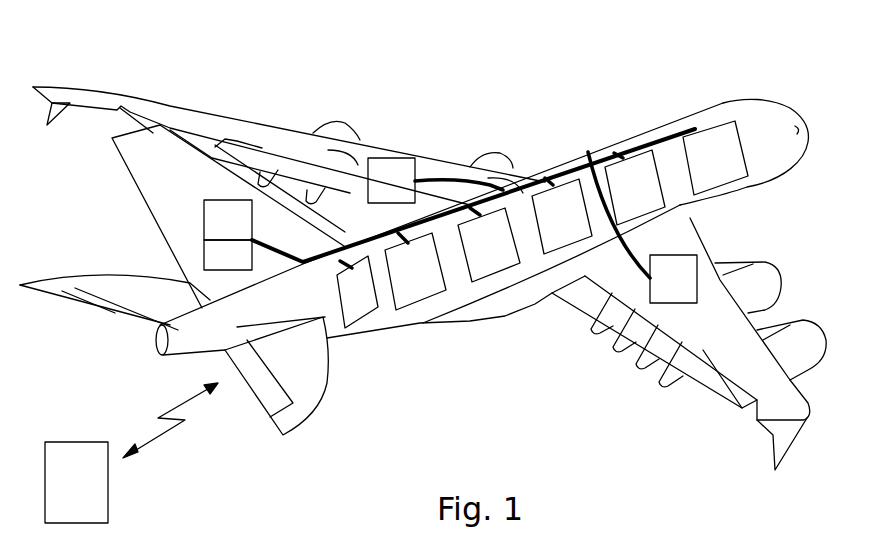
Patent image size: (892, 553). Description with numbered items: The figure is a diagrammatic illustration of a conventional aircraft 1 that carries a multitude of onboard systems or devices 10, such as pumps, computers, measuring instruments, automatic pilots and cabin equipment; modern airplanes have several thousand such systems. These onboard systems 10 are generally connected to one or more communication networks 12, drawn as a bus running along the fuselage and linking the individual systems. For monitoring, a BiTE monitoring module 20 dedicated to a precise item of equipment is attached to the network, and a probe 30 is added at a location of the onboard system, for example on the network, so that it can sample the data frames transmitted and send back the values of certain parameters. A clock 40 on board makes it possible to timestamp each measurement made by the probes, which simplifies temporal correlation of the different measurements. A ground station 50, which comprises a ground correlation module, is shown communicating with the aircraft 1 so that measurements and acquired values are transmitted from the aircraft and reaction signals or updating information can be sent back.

The aircraft 1 is at (492, 112).
The onboard systems 10 is at (450, 230).
The communication network 12 is at (563, 160).
The monitoring module 20 is at (228, 255).
The probe 30 is at (357, 292).
The clock 40 is at (715, 158).
The ground station 50 is at (131, 453).